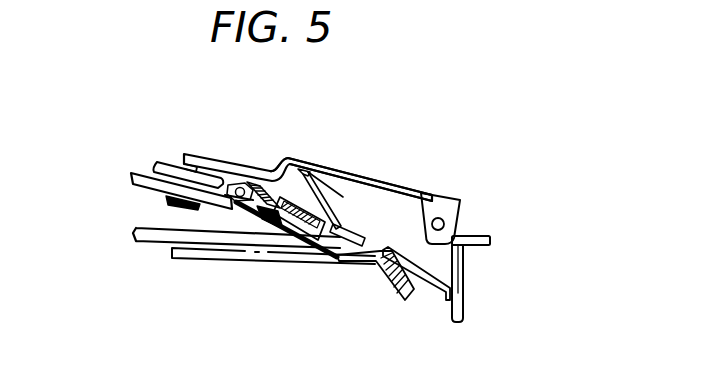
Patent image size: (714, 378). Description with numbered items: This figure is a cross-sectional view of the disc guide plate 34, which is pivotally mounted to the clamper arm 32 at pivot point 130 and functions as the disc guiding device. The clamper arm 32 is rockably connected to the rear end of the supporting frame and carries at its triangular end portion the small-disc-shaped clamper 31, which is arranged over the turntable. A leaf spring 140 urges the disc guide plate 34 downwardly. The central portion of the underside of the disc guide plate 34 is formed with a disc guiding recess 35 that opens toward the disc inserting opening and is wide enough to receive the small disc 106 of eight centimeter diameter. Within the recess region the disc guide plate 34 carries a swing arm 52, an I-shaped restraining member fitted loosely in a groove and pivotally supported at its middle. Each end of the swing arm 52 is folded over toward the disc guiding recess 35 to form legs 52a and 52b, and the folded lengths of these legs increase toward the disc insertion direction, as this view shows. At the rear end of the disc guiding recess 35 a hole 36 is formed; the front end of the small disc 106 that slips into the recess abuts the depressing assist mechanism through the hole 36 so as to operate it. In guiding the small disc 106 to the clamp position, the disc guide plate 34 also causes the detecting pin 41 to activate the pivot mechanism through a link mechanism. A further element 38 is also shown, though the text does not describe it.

The pivot point 130 is at (233, 163).
The clamper arm 32 is at (277, 158).
The swing arm 52 is at (298, 162).
The leaf spring 140 is at (346, 167).
The hole 36 is at (365, 247).
The clamper 31 is at (137, 183).
The disc 106 is at (140, 243).
The leg 52a is at (310, 230).
The leg 52b is at (282, 276).
The disc guiding recess 35 is at (362, 258).
The disc guide plate 34 is at (392, 272).
The flange 38 is at (462, 266).
The detecting pin 41 is at (463, 293).